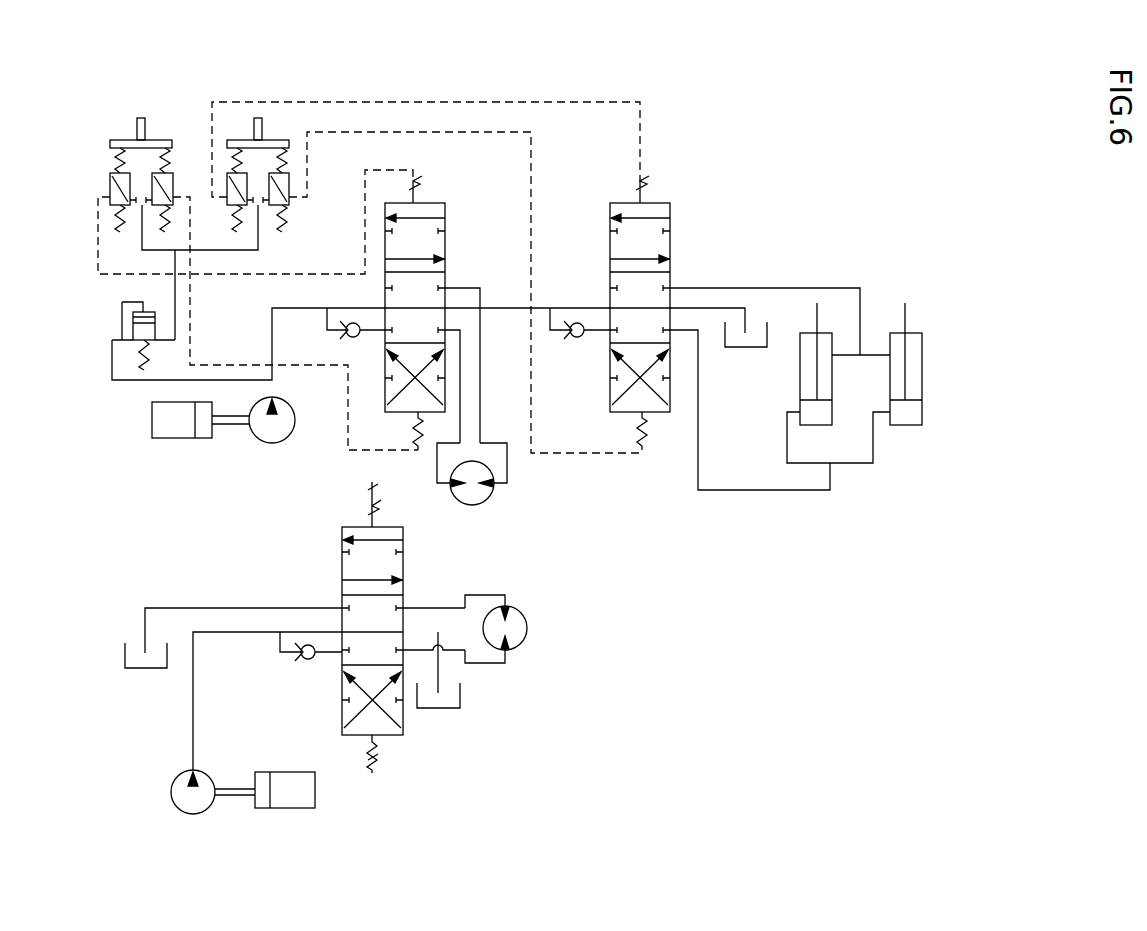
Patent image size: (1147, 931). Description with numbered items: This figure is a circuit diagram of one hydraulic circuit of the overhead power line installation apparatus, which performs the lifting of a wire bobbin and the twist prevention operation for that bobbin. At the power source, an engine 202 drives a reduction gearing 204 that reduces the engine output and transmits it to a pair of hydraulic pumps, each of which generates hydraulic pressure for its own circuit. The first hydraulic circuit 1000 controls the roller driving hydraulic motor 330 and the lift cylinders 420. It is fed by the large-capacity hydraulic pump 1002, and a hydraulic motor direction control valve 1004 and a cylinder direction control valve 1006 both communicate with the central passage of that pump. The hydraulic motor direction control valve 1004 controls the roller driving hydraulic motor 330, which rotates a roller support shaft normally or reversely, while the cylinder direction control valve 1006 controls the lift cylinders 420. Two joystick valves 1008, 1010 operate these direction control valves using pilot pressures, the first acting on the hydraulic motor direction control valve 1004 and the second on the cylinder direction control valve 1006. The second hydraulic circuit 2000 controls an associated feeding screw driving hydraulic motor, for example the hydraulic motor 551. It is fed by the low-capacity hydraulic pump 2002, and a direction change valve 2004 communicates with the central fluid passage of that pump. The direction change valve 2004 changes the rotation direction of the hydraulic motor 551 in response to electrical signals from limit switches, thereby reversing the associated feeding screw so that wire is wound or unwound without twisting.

The first hydraulic circuit 1000 is at (517, 302).
The hydraulic pump 1002 is at (277, 437).
The hydraulic motor direction control valve 1004 is at (435, 203).
The cylinder direction control valve 1006 is at (665, 202).
The joystick valve 1008 is at (118, 140).
The joystick valve 1010 is at (233, 140).
The engine 202 is at (158, 422).
The reduction gearing 204 is at (203, 438).
The roller driving hydraulic motor 330 is at (485, 497).
The lift cylinder 420 is at (827, 337).
The second hydraulic circuit 2000 is at (386, 648).
The hydraulic pump 2002 is at (183, 790).
The direction change valve 2004 is at (342, 565).
The feeding screw driving hydraulic motor 551 is at (520, 627).